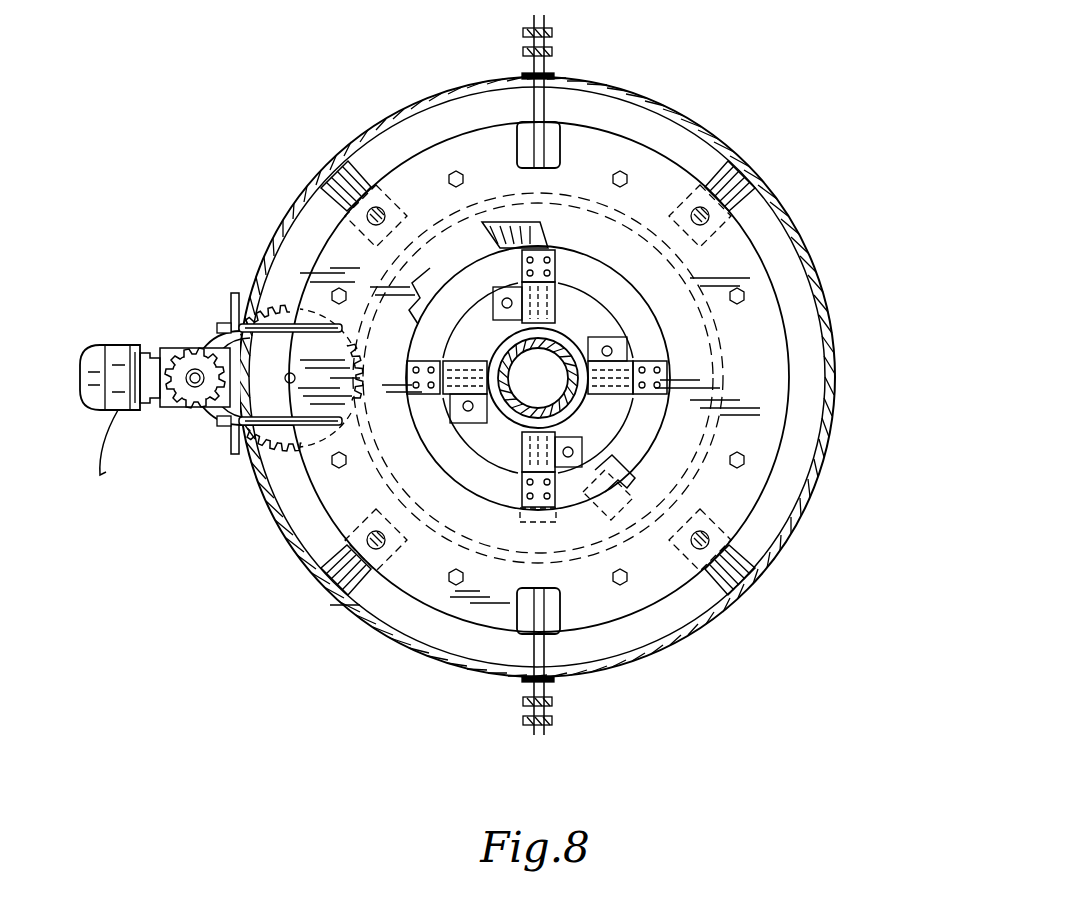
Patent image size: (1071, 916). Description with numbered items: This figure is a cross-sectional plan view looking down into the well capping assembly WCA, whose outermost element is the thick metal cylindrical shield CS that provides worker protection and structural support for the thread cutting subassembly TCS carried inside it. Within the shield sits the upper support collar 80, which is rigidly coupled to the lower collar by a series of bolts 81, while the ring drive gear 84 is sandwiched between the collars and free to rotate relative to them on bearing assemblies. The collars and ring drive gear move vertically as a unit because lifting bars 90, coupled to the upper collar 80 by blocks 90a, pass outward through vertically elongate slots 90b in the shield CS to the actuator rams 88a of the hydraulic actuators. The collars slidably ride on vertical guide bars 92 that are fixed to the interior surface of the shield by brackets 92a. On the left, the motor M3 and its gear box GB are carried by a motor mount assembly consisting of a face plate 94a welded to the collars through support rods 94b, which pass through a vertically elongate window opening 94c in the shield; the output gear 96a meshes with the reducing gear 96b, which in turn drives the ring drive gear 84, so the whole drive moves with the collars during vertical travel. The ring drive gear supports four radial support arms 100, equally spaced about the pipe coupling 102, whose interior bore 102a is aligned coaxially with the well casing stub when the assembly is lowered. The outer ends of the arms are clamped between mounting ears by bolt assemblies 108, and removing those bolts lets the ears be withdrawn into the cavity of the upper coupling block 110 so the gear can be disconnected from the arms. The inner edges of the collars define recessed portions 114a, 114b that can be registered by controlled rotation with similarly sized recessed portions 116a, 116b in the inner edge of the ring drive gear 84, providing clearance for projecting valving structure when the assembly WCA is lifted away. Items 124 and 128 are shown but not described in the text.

The upper support collar 80 is at (766, 366).
The bolts 81 is at (460, 176).
The ring drive gear 84 is at (598, 578).
The actuator rams 88a is at (553, 51).
The lifting bars 90 is at (546, 106).
The blocks 90a is at (556, 150).
The vertically elongate slots 90b is at (527, 75).
The vertical guide bars 92 is at (386, 210).
The brackets 92a is at (332, 186).
The face plate 94a is at (232, 447).
The support rods 94b is at (335, 322).
The vertically elongate window opening 94c is at (234, 300).
The output gear 96a is at (190, 350).
The reducing gear 96b is at (251, 306).
The radial support arms 100 is at (557, 290).
The pipe coupling 102 is at (507, 418).
The interior bore 102a is at (520, 360).
The bolt assemblies 108 is at (534, 246).
The upper coupling block 110 is at (556, 262).
The recessed portion 114a is at (418, 276).
The recessed portion 114b is at (593, 475).
The recessed portion 116a is at (486, 220).
The recessed portion 116b is at (640, 487).
The inner ring 124 is at (662, 406).
The clamp block 128 is at (503, 289).
The motor M3 is at (103, 349).
The gear box GB is at (185, 394).
The well capping assembly WCA is at (728, 95).
The cylindrical shield CS is at (768, 190).
The thread cutting subassembly TCS is at (458, 647).